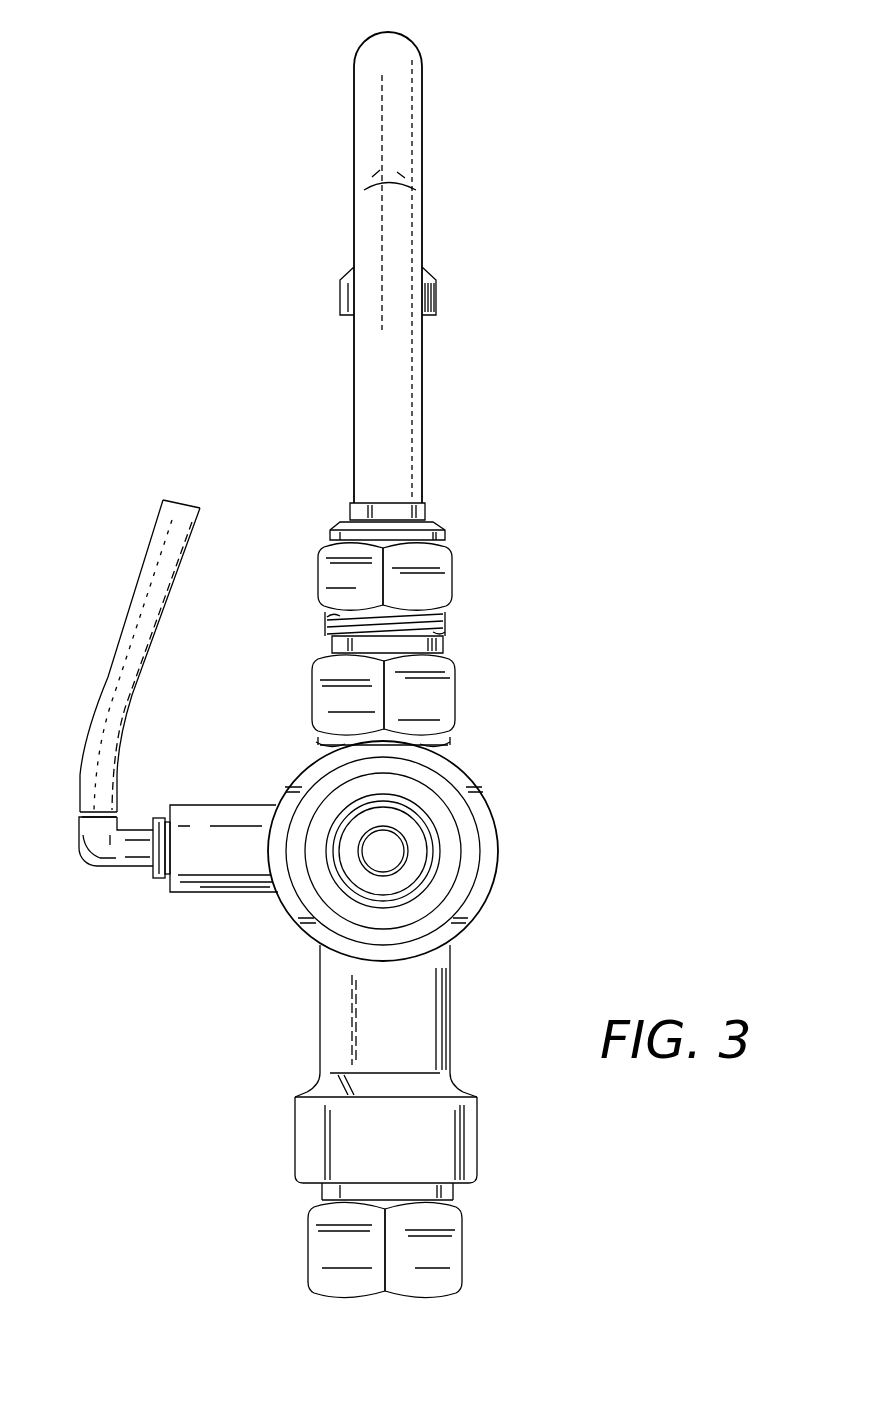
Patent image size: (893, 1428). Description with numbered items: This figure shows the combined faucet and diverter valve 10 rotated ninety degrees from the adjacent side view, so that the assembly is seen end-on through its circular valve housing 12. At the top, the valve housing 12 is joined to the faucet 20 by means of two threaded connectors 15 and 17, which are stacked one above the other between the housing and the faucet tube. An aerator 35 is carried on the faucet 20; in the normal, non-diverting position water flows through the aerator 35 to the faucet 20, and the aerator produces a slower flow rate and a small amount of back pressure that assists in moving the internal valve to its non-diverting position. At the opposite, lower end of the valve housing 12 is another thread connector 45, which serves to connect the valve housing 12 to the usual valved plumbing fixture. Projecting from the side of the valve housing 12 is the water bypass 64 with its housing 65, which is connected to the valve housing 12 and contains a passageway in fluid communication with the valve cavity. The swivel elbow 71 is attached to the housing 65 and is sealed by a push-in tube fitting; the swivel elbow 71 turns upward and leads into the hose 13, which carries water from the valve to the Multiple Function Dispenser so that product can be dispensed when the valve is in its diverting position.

The combined faucet and diverter valve 10 is at (516, 851).
The valve housing 12 is at (452, 1003).
The hose 13 is at (132, 590).
The threaded connector 15 is at (452, 560).
The threaded connector 17 is at (455, 680).
The faucet 20 is at (421, 44).
The aerator 35 is at (436, 308).
The thread connector 45 is at (462, 1242).
The water bypass 64 is at (240, 803).
The housing 65 is at (190, 893).
The swivel elbow 71 is at (84, 857).